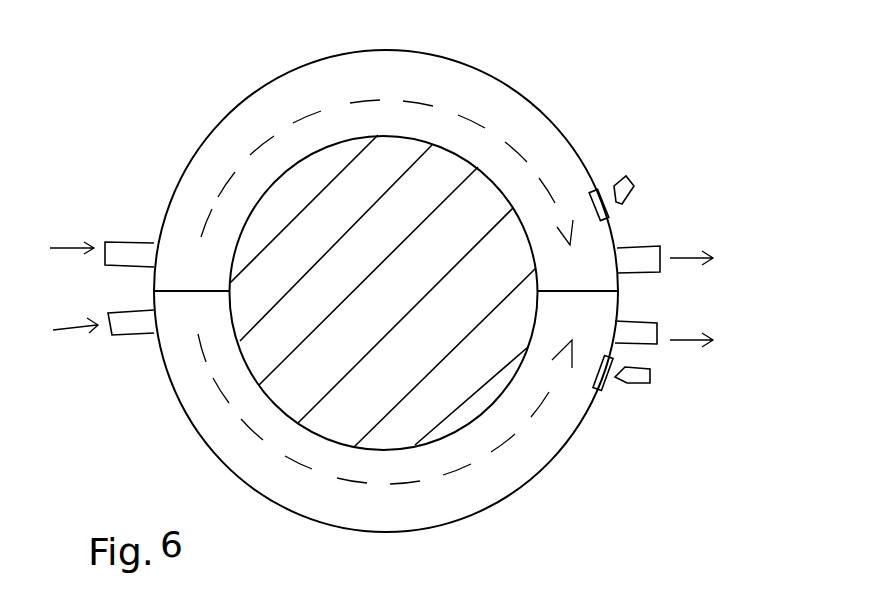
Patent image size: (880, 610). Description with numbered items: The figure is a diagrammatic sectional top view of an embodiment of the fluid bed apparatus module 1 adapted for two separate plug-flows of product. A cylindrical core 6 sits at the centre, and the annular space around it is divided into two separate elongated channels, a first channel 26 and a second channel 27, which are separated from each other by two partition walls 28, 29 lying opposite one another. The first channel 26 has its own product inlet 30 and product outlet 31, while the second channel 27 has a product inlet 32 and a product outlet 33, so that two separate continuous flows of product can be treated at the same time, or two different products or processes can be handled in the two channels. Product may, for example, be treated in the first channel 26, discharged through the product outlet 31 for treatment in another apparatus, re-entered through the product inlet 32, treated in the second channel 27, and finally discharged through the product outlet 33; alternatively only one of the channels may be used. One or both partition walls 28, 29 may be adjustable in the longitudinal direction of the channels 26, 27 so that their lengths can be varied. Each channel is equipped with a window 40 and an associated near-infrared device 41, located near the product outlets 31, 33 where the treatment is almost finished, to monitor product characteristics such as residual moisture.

The fluid bed apparatus module 1 is at (560, 459).
The cylindrical core 6 is at (405, 313).
The first channel 26 is at (452, 85).
The second channel 27 is at (447, 498).
The partition wall 28 is at (193, 292).
The partition wall 29 is at (578, 290).
The product inlet 30 is at (122, 250).
The product outlet 31 is at (645, 258).
The product inlet 32 is at (133, 323).
The product outlet 33 is at (647, 330).
The window 40 is at (599, 197).
The near-infrared device 41 is at (628, 178).